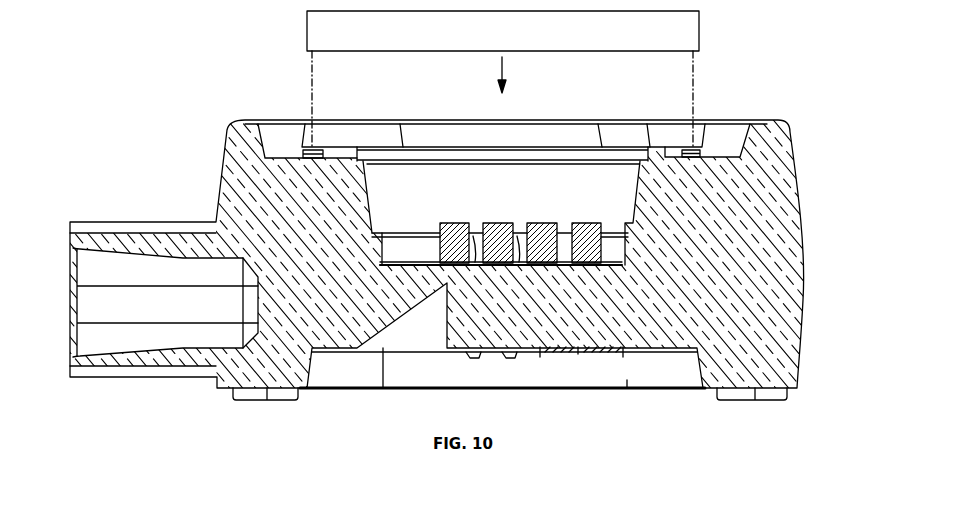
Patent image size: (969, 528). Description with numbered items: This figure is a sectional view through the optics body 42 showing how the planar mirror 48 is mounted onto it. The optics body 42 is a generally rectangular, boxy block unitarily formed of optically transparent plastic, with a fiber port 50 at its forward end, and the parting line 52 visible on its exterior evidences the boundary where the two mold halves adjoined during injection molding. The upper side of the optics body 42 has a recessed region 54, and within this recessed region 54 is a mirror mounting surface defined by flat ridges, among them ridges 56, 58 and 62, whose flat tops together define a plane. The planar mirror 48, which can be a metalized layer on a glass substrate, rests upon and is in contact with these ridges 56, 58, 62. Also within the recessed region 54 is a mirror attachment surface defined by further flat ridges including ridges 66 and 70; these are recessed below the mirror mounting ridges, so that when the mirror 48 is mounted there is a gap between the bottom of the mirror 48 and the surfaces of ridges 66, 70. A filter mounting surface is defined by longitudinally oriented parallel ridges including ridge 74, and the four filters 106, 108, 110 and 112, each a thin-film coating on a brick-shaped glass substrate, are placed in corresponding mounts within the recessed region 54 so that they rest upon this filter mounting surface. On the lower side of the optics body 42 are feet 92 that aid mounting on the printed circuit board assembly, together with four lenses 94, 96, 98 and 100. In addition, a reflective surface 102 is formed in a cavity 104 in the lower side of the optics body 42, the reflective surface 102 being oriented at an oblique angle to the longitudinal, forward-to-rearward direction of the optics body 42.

The optics body 42 is at (229, 88).
The planar mirror 48 is at (306, 30).
The fiber port 50 is at (124, 396).
The parting line 52 is at (805, 302).
The recessed region 54 is at (377, 227).
The flat ridge 56 is at (655, 147).
The flat ridge 58 is at (352, 147).
The flat ridge 62 is at (422, 147).
The flat ridge 66 is at (307, 120).
The flat ridge 70 is at (701, 147).
The flat ridge 74 is at (393, 256).
The feet 92 is at (259, 400).
The lens 94 is at (472, 357).
The lens 96 is at (507, 357).
The lens 98 is at (550, 357).
The lens 100 is at (592, 357).
The reflective surface 102 is at (384, 322).
The cavity 104 is at (411, 331).
The filter 106 is at (452, 223).
The filter 108 is at (494, 223).
The filter 110 is at (546, 223).
The filter 112 is at (580, 223).